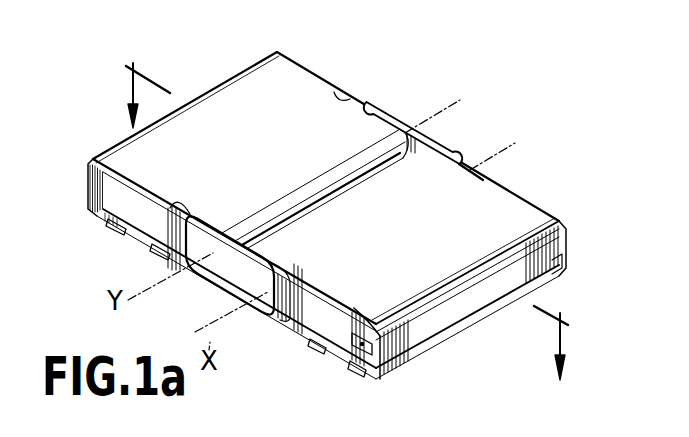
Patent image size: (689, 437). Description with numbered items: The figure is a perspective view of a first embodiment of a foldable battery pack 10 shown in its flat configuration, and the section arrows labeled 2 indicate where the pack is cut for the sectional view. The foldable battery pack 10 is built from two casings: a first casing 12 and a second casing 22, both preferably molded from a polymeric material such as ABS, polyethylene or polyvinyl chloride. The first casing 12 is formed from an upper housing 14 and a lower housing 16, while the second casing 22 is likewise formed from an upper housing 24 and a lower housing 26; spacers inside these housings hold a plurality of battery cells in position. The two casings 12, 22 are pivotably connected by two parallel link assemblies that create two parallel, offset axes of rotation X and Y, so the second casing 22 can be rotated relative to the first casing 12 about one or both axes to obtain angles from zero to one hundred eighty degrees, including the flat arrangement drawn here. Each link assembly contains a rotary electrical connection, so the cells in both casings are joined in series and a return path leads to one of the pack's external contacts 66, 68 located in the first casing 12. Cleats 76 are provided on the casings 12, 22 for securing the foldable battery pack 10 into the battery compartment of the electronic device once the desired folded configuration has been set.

The foldable battery pack 10 is at (483, 115).
The first casing 12 is at (500, 207).
The upper housing 14 is at (566, 232).
The lower housing 16 is at (562, 266).
The second casing 22 is at (306, 77).
The upper housing 24 is at (242, 93).
The lower housing 26 is at (95, 208).
The external contact 66 is at (348, 350).
The external contact 68 is at (562, 212).
The cleats 76 is at (362, 396).
The section line 2 is at (346, 228).